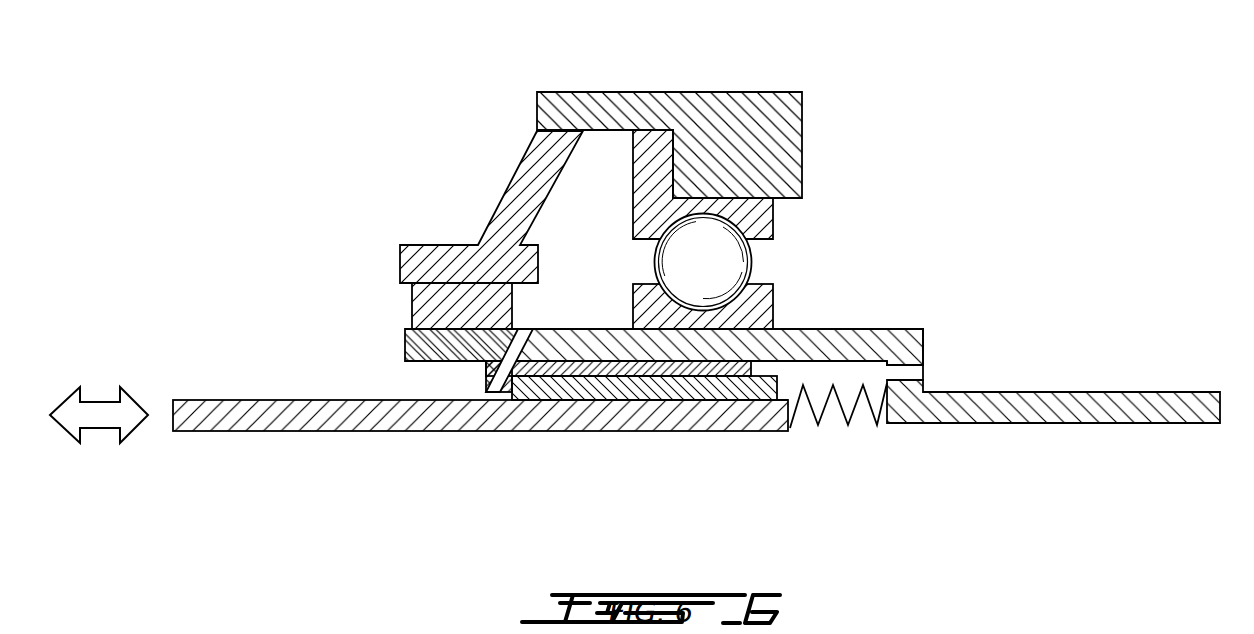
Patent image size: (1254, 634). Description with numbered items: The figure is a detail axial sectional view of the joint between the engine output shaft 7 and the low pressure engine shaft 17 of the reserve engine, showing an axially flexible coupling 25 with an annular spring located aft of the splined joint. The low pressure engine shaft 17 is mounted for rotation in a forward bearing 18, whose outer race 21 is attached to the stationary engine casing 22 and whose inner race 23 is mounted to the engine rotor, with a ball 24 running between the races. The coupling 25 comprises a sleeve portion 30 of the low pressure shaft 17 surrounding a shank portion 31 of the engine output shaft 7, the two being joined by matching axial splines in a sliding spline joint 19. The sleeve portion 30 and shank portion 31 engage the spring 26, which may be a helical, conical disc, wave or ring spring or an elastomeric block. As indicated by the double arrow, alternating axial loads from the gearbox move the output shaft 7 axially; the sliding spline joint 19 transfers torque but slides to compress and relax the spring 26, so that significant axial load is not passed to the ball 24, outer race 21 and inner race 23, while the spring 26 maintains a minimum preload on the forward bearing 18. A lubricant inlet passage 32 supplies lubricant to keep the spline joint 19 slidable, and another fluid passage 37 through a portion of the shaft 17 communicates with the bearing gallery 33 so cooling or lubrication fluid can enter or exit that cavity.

The engine output shaft 7 is at (400, 432).
The low pressure engine shaft 17 is at (968, 408).
The forward bearing 18 is at (698, 229).
The sliding spline joint 19 is at (665, 392).
The outer race 21 is at (773, 222).
The engine casing 22 is at (648, 112).
The inner race 23 is at (748, 312).
The ball 24 is at (675, 257).
The axially flexible coupling 25 is at (828, 437).
The spring 26 is at (855, 413).
The sleeve portion 30 is at (923, 330).
The shank portion 31 is at (538, 413).
The lubricant inlet passage 32 is at (908, 373).
The bearing gallery 33 is at (597, 288).
The fluid passage 37 is at (497, 352).